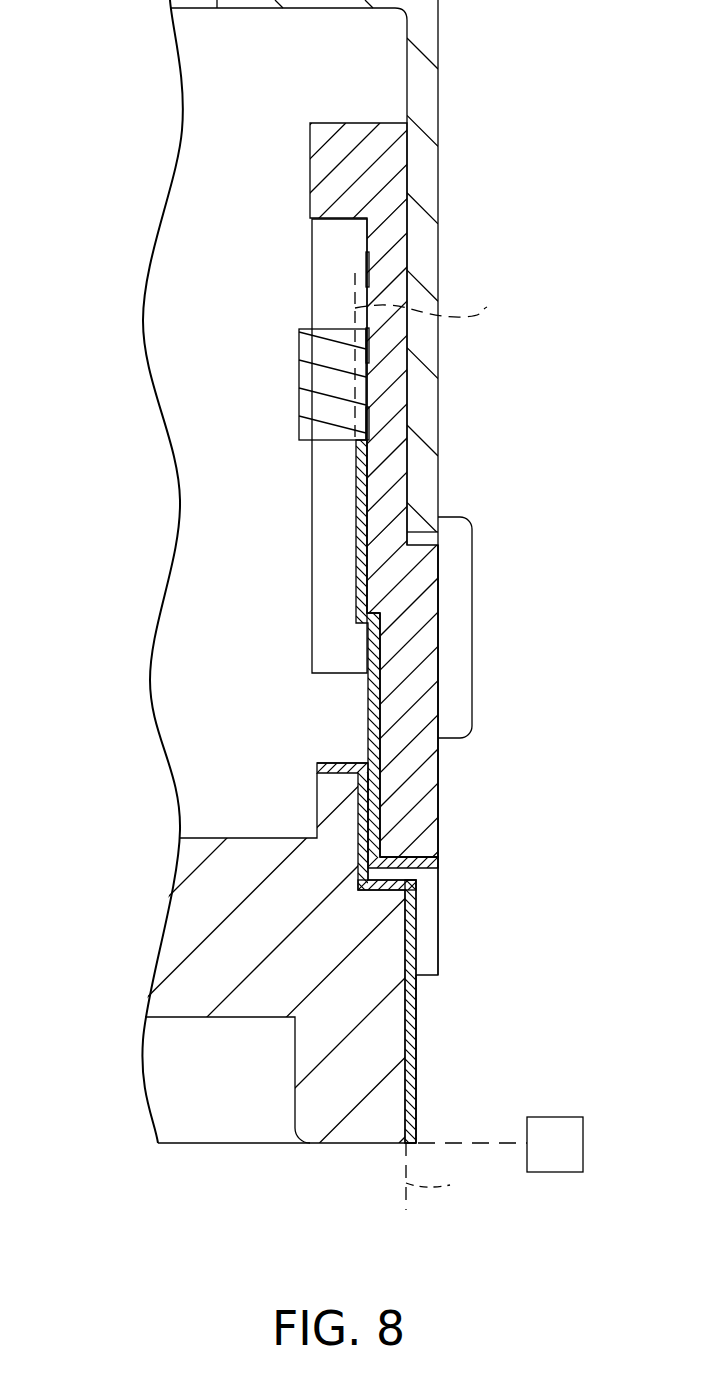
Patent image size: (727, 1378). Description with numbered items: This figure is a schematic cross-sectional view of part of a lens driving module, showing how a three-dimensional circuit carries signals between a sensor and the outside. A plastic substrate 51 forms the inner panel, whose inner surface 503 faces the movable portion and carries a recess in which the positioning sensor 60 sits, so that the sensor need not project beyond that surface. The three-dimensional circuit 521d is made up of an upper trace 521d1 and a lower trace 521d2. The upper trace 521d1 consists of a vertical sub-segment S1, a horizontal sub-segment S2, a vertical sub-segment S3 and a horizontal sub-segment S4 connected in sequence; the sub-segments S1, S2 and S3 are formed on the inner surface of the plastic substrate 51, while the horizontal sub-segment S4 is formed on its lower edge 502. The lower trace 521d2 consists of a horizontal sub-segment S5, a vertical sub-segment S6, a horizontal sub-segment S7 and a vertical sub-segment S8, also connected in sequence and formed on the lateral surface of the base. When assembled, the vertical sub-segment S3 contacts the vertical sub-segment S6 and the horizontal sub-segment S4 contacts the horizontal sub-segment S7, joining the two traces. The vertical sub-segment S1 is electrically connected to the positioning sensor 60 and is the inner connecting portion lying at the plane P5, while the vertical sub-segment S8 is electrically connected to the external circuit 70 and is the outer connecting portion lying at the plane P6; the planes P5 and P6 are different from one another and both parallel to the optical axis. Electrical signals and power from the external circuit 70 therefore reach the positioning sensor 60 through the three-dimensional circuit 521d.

The plastic substrate 51 is at (332, 160).
The inner surface of the inner panel 503 is at (310, 208).
The positioning sensor 60 is at (332, 385).
The plane P5 is at (438, 356).
The vertical sub-segment S1 is at (358, 537).
The horizontal sub-segment S2 is at (372, 615).
The vertical sub-segment S3 is at (378, 698).
The lower edge of the plastic substrate 502 is at (438, 838).
The horizontal sub-segment S4 is at (428, 862).
The 3-D circuit 521d is at (480, 956).
The upper trace 521d1 is at (430, 877).
The lower trace 521d2 is at (428, 938).
The horizontal sub-segment S5 is at (320, 767).
The vertical sub-segment S6 is at (365, 803).
The horizontal sub-segment S7 is at (400, 892).
The vertical sub-segment S8 is at (418, 1003).
The external circuit 70 is at (553, 1117).
The plane P6 is at (446, 1176).